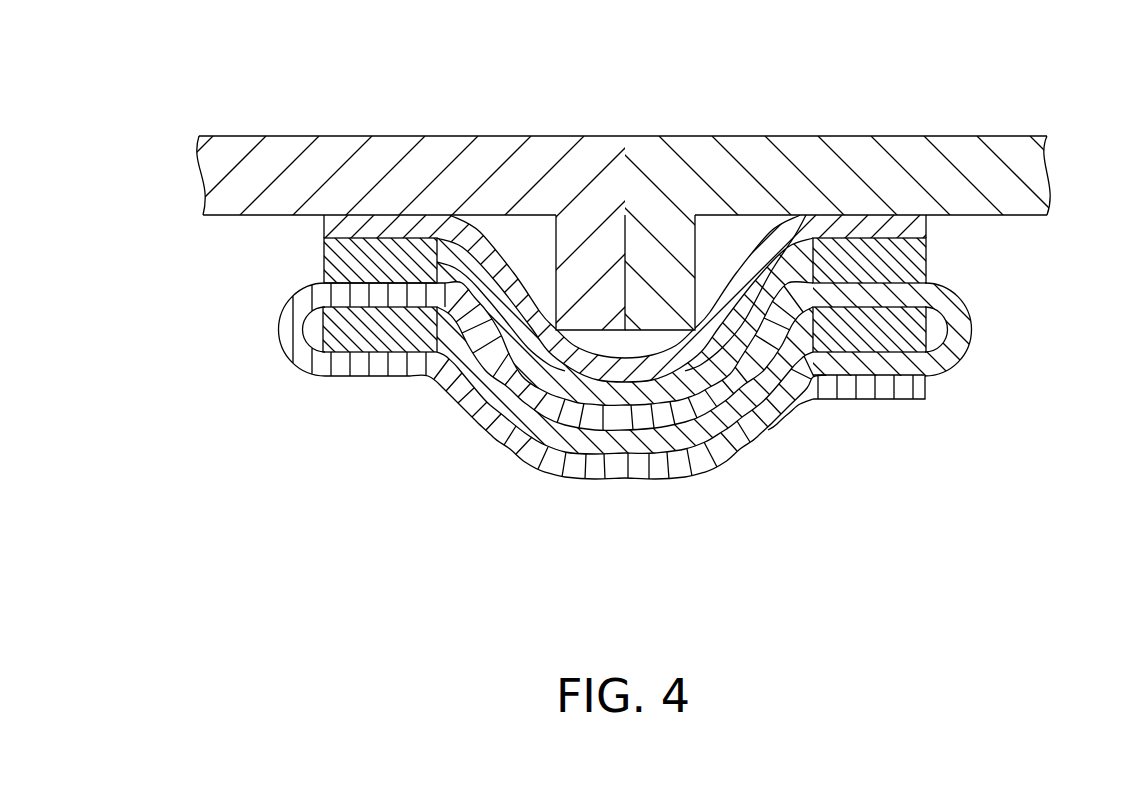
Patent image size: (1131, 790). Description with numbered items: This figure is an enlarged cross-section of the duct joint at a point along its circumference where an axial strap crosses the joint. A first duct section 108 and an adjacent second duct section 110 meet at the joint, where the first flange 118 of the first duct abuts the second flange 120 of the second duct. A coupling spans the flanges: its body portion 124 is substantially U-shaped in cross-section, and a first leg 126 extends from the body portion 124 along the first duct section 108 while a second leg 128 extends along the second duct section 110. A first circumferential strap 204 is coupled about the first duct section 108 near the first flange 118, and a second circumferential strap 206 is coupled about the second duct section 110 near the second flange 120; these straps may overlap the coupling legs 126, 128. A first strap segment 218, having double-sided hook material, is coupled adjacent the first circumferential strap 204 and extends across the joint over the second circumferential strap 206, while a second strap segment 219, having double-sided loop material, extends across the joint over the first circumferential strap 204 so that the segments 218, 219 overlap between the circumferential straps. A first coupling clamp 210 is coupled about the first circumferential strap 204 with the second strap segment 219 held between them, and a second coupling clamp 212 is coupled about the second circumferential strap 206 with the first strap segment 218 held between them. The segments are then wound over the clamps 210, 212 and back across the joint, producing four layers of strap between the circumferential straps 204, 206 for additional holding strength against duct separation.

The first duct section 108 is at (307, 163).
The second duct section 110 is at (948, 188).
The first flange 118 is at (586, 270).
The second flange 120 is at (653, 267).
The body portion 124 is at (660, 365).
The first leg 126 is at (384, 222).
The second leg 128 is at (881, 224).
The first circumferential strap 204 is at (323, 247).
The second circumferential strap 206 is at (926, 260).
The first coupling clamp 210 is at (322, 340).
The second coupling clamp 212 is at (950, 357).
The first strap segment 218 is at (962, 322).
The second strap segment 219 is at (287, 328).